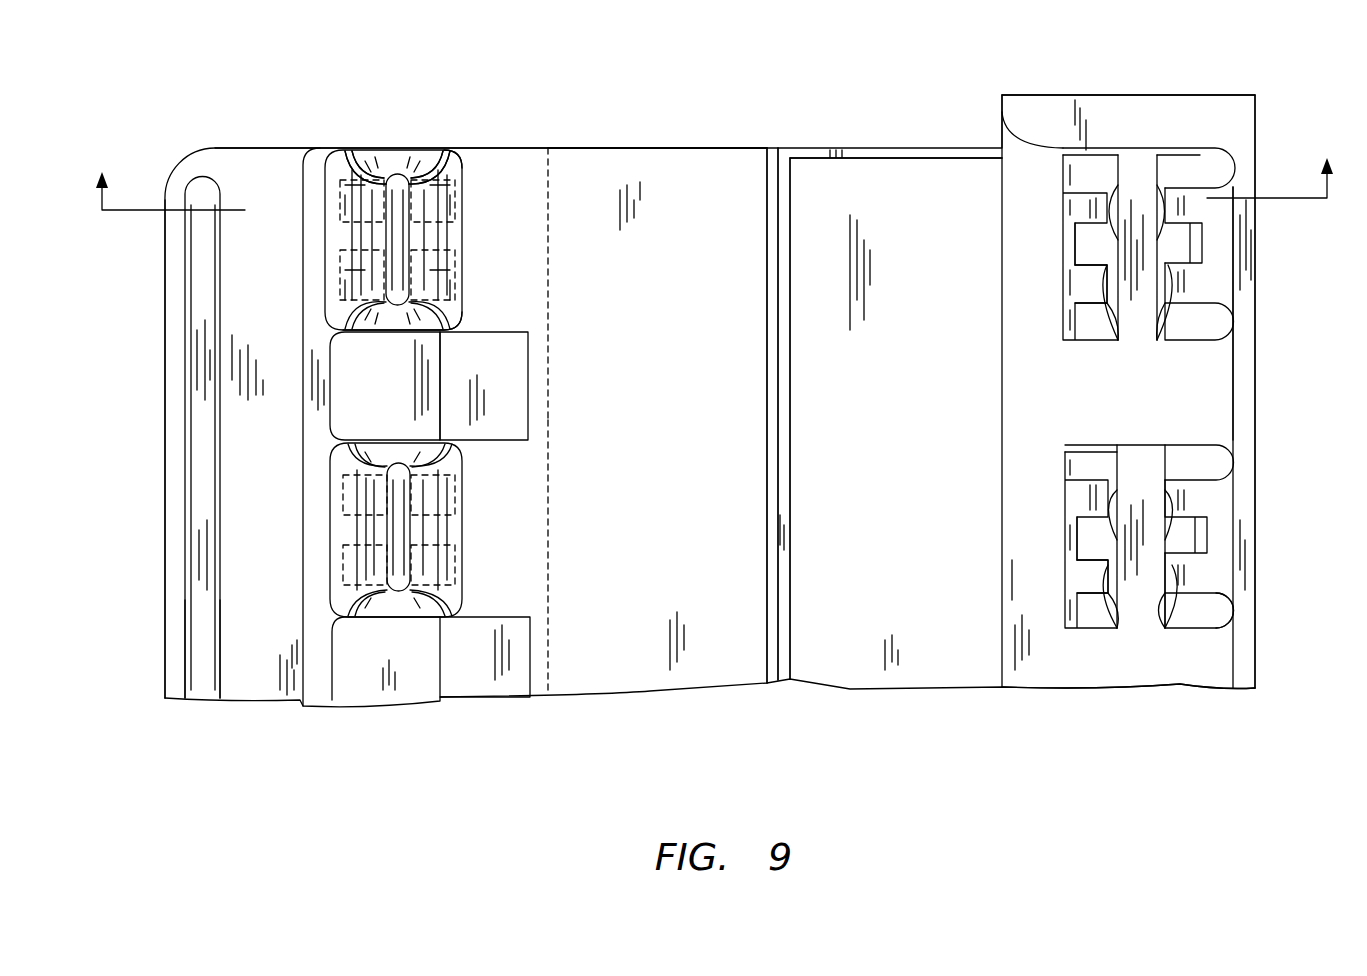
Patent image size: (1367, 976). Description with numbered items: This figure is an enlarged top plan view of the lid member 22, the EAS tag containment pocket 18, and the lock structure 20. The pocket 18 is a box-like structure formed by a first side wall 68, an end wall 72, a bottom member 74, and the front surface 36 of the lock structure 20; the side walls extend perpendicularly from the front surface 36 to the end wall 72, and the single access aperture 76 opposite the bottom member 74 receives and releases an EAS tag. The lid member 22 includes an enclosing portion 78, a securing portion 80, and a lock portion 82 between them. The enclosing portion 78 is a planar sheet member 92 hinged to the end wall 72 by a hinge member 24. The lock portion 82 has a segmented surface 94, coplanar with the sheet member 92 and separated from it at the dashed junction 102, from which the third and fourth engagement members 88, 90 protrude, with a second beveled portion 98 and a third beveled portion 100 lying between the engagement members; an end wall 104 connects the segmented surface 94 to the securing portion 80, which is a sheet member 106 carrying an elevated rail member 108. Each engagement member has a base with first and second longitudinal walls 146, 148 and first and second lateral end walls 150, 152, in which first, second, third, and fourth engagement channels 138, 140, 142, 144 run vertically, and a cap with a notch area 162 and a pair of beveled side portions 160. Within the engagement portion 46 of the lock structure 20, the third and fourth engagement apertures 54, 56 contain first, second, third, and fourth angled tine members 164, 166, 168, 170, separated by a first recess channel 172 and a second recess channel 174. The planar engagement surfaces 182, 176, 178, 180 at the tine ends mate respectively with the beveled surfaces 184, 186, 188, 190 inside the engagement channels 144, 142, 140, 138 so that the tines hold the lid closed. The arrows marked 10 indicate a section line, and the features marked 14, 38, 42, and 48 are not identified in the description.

The section line 10- 10 is at (713, 165).
The hinged panel assembly 14 is at (882, 755).
The EAS tag containment pocket 18 is at (920, 705).
The lock structure 20 is at (1128, 705).
The lid member 22 is at (578, 105).
The hinge member 24 is at (773, 682).
The front surface 36 is at (1000, 120).
The outer edge 38 is at (1270, 591).
The top corner portion 42 is at (1216, 103).
The engagement portion 46 is at (1247, 490).
The flange portion 48 is at (1225, 378).
The third engagement aperture 54 is at (1222, 614).
The fourth engagement aperture 56 is at (1138, 172).
The first side wall 68 is at (793, 150).
The end wall 72 is at (790, 617).
The bottom member 74 is at (816, 172).
The access aperture 76 is at (875, 150).
The enclosing portion 78 is at (605, 715).
The securing portion 80 is at (266, 715).
The lock portion 82 is at (414, 720).
The third engagement member 88 is at (328, 455).
The fourth engagement member 90 is at (332, 152).
The sheet member 92 is at (635, 165).
The segmented surface 94 is at (553, 300).
The second beveled portion 98 is at (528, 617).
The third beveled portion 100 is at (520, 372).
The junction 102 is at (553, 507).
The end wall 104 is at (303, 645).
The sheet member 106 is at (183, 178).
The elevated rail member 108 is at (210, 680).
The first engagement channel 138 is at (460, 278).
The second engagement channel 140 is at (460, 180).
The third engagement channel 142 is at (345, 173).
The fourth engagement channel 144 is at (345, 258).
The first longitudinal wall 146 is at (455, 160).
The second longitudinal wall 148 is at (340, 319).
The first lateral end wall 150 is at (396, 333).
The second lateral end wall 152 is at (368, 166).
The beveled side portions 160 is at (393, 168).
The notch area 162 is at (410, 186).
The first angled tine member 164 is at (1185, 287).
The second angled tine member 166 is at (1212, 165).
The third angled tine member 168 is at (1080, 208).
The fourth angled tine member 170 is at (1088, 275).
The first recess channel 172 is at (1180, 245).
The second recess channel 174 is at (1086, 243).
The engagement surface 176 is at (1157, 190).
The engagement surface 178 is at (1118, 200).
The engagement surface 180 is at (1117, 308).
The engagement surface 182 is at (1157, 308).
The beveled surface 184 is at (345, 286).
The beveled surface 186 is at (350, 205).
The beveled surface 188 is at (455, 213).
The beveled surface 190 is at (455, 258).